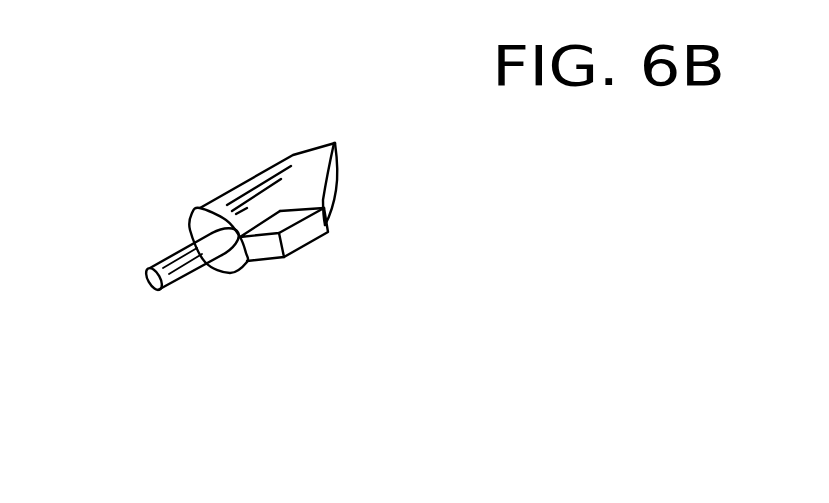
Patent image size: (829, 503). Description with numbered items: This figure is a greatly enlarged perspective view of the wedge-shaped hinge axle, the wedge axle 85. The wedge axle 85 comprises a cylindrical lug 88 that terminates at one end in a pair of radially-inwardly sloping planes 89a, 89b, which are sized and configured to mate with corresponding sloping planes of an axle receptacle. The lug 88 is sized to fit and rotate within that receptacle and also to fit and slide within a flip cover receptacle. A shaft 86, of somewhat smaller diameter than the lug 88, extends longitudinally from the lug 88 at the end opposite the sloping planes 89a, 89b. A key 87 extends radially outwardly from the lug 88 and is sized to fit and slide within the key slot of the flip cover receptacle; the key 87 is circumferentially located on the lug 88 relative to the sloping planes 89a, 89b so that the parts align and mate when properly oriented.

The wedge axle 85 is at (365, 243).
The shaft 86 is at (148, 283).
The key 87 is at (295, 243).
The cylindrical lug 88 is at (250, 190).
The radially-inwardly sloping plane 89a is at (310, 118).
The radially-inwardly sloping plane 89b is at (336, 185).